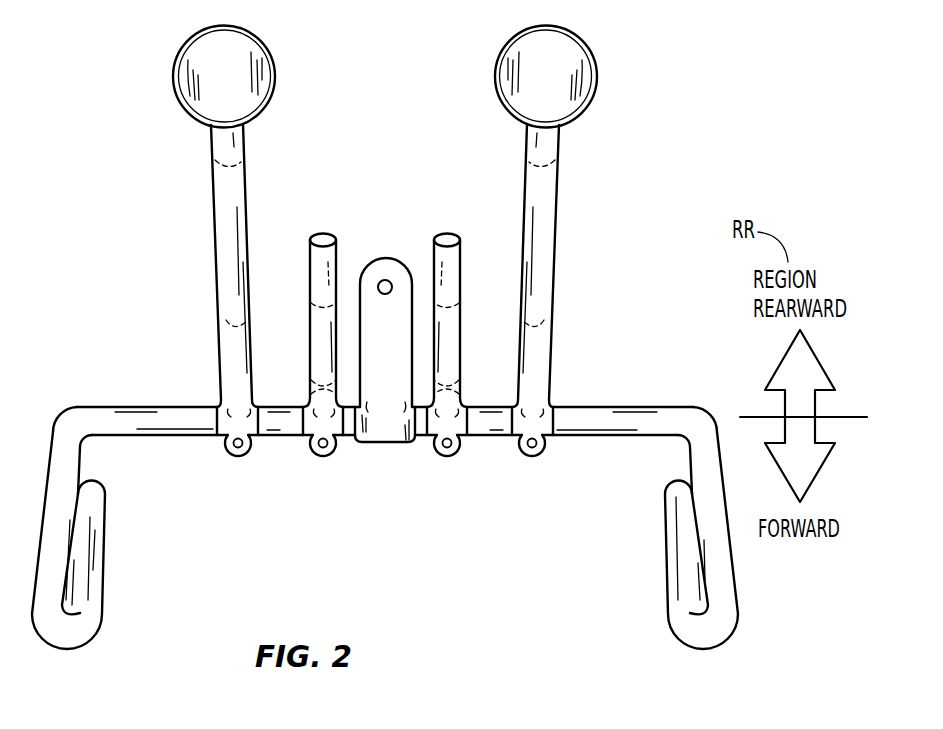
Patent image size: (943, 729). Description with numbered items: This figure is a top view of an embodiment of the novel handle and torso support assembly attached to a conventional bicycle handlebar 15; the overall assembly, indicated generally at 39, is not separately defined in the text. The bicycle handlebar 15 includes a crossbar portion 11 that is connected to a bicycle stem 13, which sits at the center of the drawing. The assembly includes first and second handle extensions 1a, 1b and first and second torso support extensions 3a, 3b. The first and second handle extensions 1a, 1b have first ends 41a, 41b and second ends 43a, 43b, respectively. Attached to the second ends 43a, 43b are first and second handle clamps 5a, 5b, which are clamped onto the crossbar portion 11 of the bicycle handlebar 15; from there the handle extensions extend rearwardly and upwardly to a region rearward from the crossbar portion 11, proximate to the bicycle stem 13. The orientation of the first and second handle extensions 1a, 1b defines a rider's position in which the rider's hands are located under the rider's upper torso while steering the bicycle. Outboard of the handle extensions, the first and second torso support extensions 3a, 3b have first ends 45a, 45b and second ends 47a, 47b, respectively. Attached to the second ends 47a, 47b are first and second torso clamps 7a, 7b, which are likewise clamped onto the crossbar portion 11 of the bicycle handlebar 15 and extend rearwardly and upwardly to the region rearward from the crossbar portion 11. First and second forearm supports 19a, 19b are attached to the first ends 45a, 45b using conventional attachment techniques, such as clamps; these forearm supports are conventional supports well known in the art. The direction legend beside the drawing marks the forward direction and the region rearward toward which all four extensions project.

The first handle extension 1a is at (327, 345).
The second handle extension 1b is at (469, 345).
The first torso support extension 3a is at (190, 259).
The second torso support extension 3b is at (573, 256).
The first handle clamp 5a is at (325, 457).
The second handle clamp 5b is at (450, 457).
The first torso clamp 7a is at (240, 457).
The second torso clamp 7b is at (535, 457).
The crossbar portion 11 is at (182, 407).
The bicycle stem 13 is at (385, 258).
The bicycle handlebar 15 is at (740, 590).
The first forearm support 19a is at (174, 73).
The second forearm support 19b is at (597, 65).
The handlebar assembly 39 is at (528, 565).
The first end of first handle extension 41a is at (310, 273).
The first end of second handle extension 41b is at (461, 272).
The second end of first handle extension 43a is at (310, 381).
The second end of second handle extension 43b is at (461, 367).
The first end of first torso support extension 45a is at (210, 149).
The first end of second torso support extension 45b is at (558, 152).
The second end of first torso support extension 47a is at (218, 328).
The second end of second torso support extension 47b is at (552, 325).